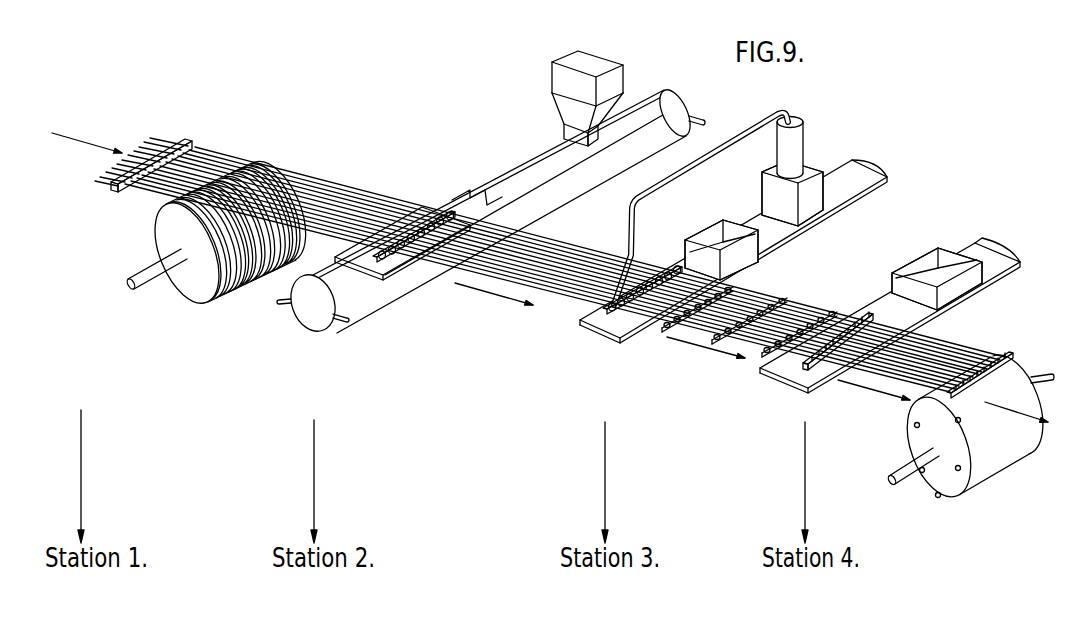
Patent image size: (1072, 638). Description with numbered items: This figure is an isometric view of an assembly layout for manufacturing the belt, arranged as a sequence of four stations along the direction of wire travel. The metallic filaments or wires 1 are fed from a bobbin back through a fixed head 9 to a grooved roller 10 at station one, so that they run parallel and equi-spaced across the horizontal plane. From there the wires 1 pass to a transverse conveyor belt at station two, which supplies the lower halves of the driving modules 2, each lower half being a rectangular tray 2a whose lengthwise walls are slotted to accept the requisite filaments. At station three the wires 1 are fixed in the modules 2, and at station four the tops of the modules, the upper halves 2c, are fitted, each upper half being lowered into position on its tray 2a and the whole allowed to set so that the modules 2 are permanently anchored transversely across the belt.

The metallic filaments 1 is at (561, 299).
The driving module 2 is at (802, 365).
The rectangular tray 2a is at (386, 258).
The upper half of the driving module 2c is at (866, 316).
The fixed head 9 is at (193, 138).
The grooved roller 10 is at (224, 288).